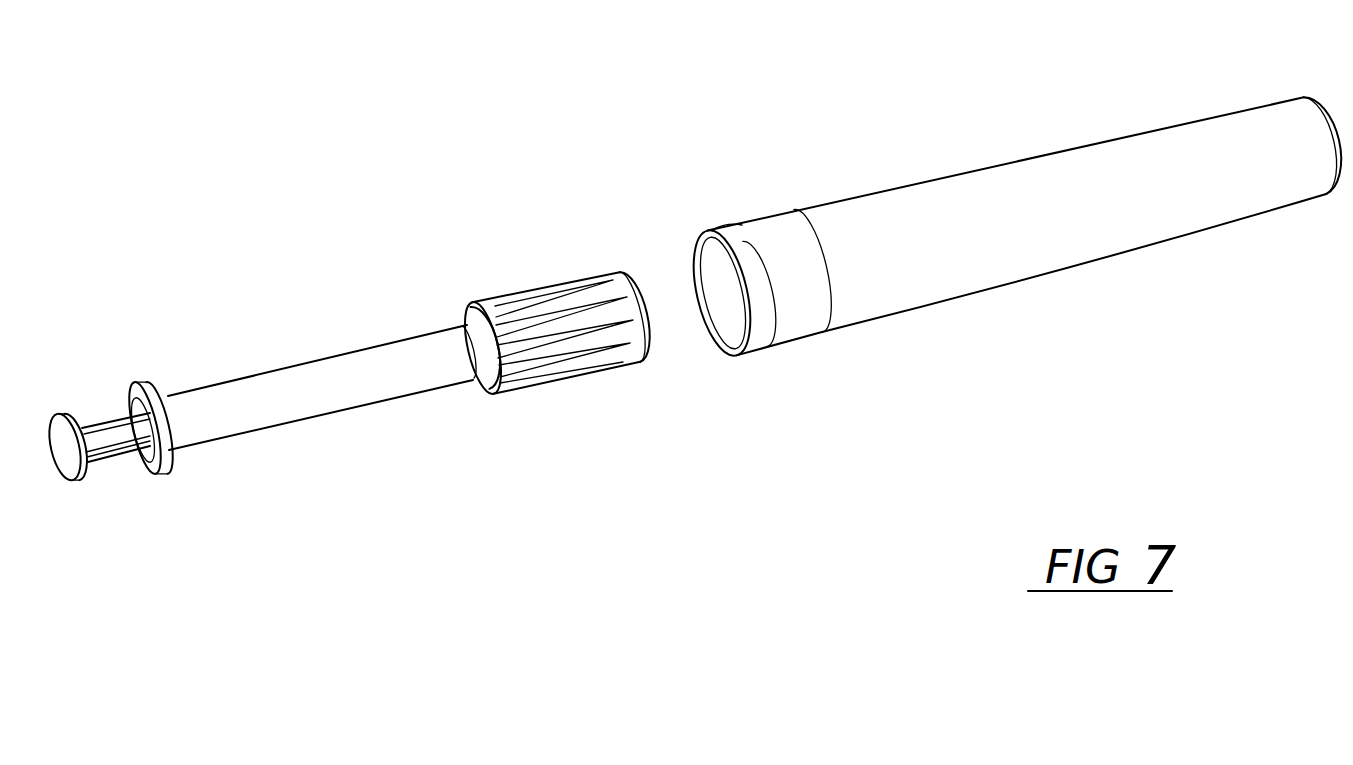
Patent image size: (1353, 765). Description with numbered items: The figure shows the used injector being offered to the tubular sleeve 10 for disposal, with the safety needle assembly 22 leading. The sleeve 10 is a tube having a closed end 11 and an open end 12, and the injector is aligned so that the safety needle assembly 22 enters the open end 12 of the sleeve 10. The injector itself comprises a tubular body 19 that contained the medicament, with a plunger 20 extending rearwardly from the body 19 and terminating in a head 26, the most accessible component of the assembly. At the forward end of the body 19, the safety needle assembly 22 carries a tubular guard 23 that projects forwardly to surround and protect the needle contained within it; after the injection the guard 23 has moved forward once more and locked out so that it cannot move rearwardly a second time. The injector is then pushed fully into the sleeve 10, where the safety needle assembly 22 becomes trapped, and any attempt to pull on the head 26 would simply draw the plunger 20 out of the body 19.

The tubular sleeve 10 is at (967, 183).
The closed end 11 is at (1318, 98).
The open end 12 is at (695, 226).
The tubular body 19 is at (318, 367).
The plunger 20 is at (104, 428).
The safety needle assembly 22 is at (553, 272).
The tubular guard 23 is at (633, 352).
The head 26 is at (82, 480).